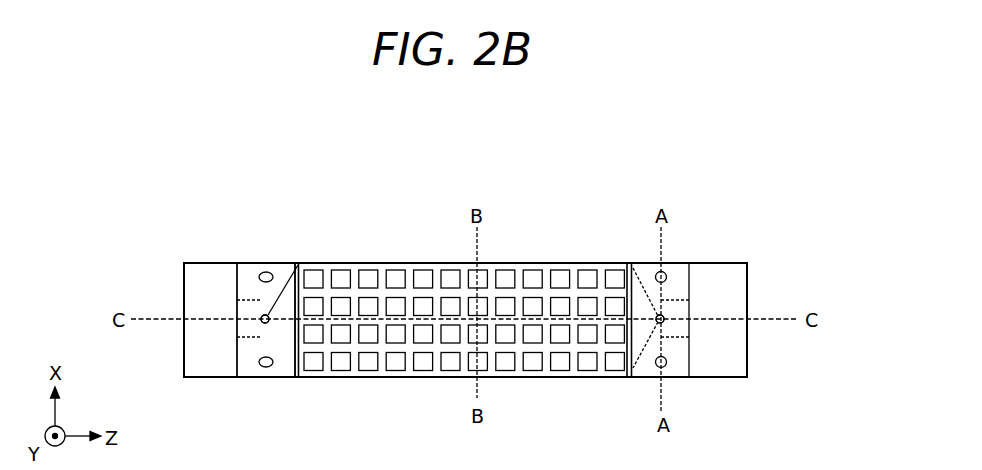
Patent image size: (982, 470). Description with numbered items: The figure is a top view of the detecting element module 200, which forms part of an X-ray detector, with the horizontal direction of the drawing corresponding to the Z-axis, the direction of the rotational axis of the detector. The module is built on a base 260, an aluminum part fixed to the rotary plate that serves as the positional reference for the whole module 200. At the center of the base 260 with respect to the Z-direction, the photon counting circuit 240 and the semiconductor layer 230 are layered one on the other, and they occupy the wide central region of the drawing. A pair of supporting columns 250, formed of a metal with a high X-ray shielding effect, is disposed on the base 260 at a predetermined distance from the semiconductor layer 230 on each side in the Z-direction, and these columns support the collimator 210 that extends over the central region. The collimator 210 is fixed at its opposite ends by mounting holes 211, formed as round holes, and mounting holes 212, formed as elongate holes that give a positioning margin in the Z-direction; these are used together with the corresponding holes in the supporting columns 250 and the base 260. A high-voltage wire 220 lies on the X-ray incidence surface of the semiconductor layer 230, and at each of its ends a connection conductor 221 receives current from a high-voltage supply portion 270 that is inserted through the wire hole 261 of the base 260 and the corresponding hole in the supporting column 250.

The detecting element module 200 is at (777, 172).
The collimator 210 is at (520, 263).
The mounting hole 211 is at (659, 282).
The mounting hole 212 is at (265, 282).
The high-voltage wire 220 is at (668, 300).
The connection conductor 221 is at (268, 323).
The semiconductor layer 230 is at (298, 265).
The photon counting circuit 240 is at (463, 320).
The supporting column 250 is at (260, 265).
The base 260 is at (222, 265).
The wire hole 261 is at (265, 319).
The high-voltage supply portion 270 is at (660, 319).